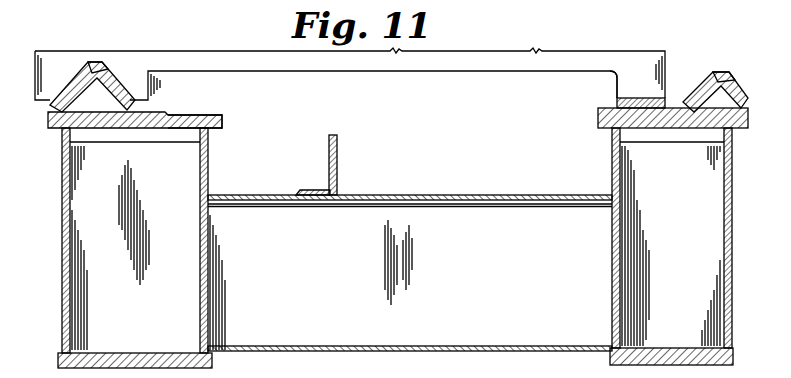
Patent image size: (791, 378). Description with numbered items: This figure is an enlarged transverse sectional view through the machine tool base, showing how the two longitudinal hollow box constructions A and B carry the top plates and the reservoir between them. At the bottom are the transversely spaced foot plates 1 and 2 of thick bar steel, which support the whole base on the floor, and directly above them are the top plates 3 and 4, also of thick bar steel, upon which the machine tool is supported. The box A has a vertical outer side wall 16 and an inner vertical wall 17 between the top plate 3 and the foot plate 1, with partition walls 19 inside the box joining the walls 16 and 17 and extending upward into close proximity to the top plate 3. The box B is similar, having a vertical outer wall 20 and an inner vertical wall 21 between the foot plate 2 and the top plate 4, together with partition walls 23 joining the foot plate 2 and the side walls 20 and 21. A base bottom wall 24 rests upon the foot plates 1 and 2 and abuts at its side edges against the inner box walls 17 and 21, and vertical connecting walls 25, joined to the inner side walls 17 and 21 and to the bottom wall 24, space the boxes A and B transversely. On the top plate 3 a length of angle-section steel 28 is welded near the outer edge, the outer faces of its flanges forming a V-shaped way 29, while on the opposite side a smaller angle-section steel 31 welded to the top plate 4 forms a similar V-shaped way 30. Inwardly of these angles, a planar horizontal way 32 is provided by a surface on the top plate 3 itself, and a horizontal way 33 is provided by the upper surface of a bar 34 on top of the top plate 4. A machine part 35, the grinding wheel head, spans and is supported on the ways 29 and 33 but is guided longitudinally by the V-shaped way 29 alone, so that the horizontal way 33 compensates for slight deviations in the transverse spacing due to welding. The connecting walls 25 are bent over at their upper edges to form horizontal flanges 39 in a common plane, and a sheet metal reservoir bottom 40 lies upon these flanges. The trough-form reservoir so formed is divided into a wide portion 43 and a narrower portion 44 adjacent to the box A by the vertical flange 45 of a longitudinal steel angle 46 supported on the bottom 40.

The foot plate 1 is at (58, 358).
The foot plate 2 is at (733, 355).
The top plate 3 is at (48, 119).
The top plate 4 is at (748, 114).
The vertical outer side wall 16 is at (62, 220).
The inner vertical wall 17 is at (200, 229).
The partition wall 19 is at (90, 160).
The vertical outer wall 20 is at (732, 241).
The inner vertical wall 21 is at (612, 231).
The partition wall 23 is at (714, 170).
The base bottom wall 24 is at (465, 346).
The vertical connecting wall 25 is at (435, 262).
The angle-section steel 28 is at (72, 83).
The V-shaped way 29 is at (100, 64).
The V-shaped way 30 is at (727, 76).
The angle-section steel 31 is at (735, 92).
The planar horizontal way 32 is at (190, 113).
The planar horizontal way 33 is at (617, 95).
The bar 34 is at (618, 103).
The machine part 35 is at (305, 72).
The horizontal flange 39 is at (362, 206).
The reservoir bottom 40 is at (421, 195).
The wide portion 43 is at (492, 160).
The narrower portion 44 is at (244, 159).
The vertical flange 45 is at (338, 160).
The longitudinal steel angle 46 is at (325, 190).
The box A is at (62, 188).
The box B is at (732, 198).